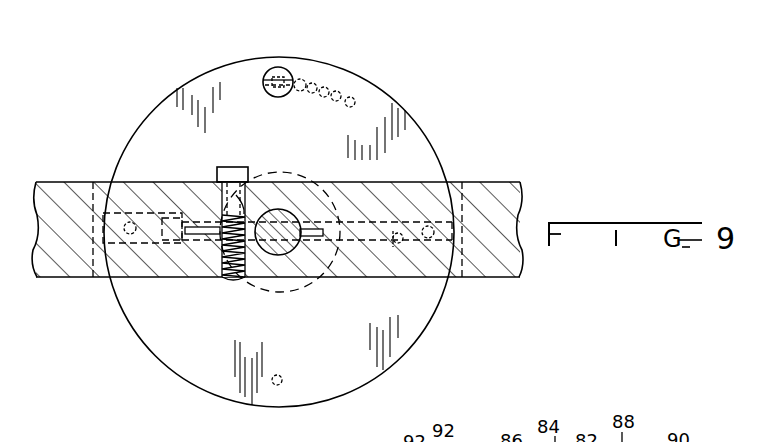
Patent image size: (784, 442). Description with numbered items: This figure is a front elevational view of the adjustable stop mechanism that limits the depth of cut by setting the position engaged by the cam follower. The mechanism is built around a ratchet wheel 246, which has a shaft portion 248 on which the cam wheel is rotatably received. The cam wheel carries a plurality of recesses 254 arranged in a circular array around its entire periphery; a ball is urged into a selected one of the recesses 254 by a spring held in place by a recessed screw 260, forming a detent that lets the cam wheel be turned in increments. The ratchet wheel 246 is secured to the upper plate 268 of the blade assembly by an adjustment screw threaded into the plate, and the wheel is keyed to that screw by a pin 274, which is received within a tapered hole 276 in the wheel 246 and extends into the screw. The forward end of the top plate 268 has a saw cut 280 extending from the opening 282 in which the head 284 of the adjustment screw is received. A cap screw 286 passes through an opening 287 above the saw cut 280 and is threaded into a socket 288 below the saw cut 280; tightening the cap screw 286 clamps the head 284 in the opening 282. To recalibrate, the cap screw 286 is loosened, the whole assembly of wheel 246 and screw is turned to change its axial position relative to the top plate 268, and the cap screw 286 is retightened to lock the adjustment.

The ratchet wheel 246 is at (405, 110).
The shaft portion 248 is at (295, 293).
The recesses 254 is at (312, 82).
The recessed screw 260 is at (278, 67).
The upper plate 268 is at (493, 182).
The pin 274 is at (167, 213).
The tapered hole 276 is at (399, 247).
The saw cut 280 is at (211, 278).
The opening 282 is at (266, 208).
The head 284 is at (309, 262).
The cap screw 286 is at (233, 167).
The opening 287 is at (230, 200).
The socket 288 is at (232, 278).